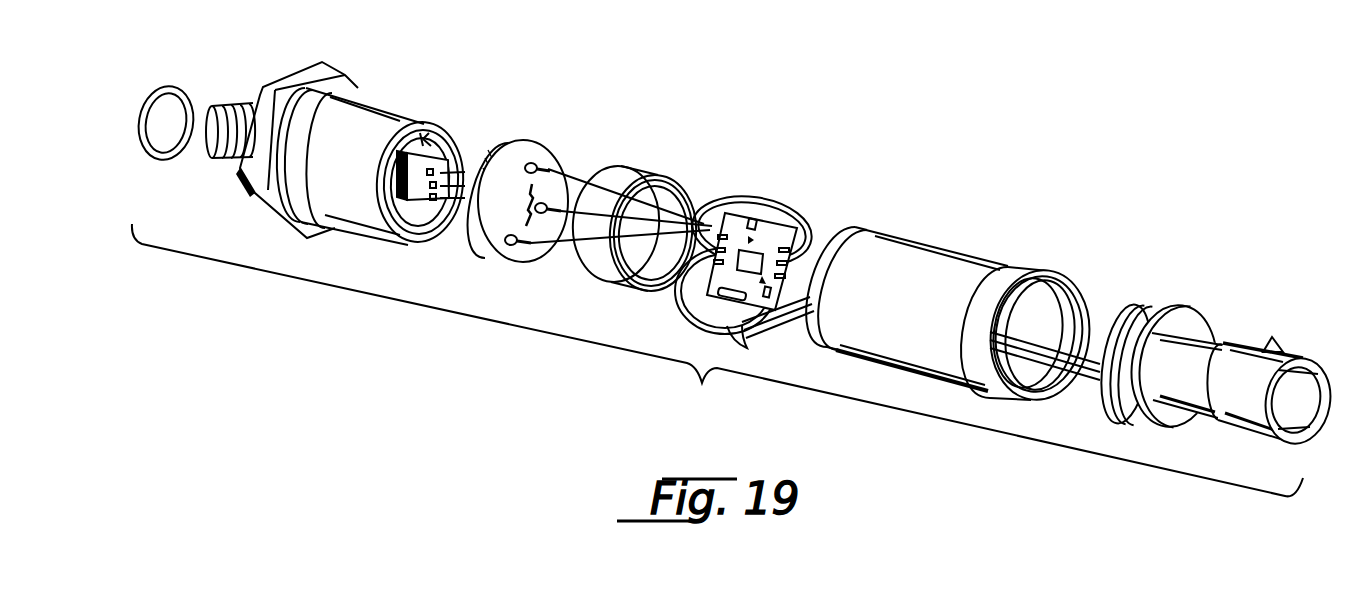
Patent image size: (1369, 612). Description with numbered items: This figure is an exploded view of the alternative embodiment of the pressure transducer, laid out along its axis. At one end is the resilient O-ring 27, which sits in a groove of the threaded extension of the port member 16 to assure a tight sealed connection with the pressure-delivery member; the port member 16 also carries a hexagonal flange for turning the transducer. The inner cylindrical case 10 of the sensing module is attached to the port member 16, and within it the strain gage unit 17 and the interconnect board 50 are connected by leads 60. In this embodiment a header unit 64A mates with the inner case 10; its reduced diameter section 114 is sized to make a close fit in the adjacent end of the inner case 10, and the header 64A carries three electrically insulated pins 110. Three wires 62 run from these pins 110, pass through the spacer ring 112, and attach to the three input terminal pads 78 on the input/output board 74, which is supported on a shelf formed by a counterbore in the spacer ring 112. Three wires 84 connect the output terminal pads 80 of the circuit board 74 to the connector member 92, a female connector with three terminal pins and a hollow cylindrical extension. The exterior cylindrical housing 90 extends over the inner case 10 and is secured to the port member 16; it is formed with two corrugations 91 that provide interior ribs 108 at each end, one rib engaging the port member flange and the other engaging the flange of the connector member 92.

The O-ring 27 is at (166, 88).
The port member 16 is at (357, 76).
The inner cylindrical case 10 is at (394, 100).
The strain gage unit 17 is at (426, 137).
The interconnect board 50 is at (440, 155).
The leads 60 is at (407, 226).
The wires 62 is at (445, 217).
The reduced diameter section 114 is at (472, 240).
The header unit 64A is at (533, 140).
The pins 110 is at (562, 208).
The spacer ring 112 is at (647, 172).
The input/output board 74 is at (769, 216).
The input terminal pads 78 is at (788, 248).
The output terminal pads 80 is at (710, 295).
The wire leads 84 is at (742, 338).
The exterior cylindrical housing 90 is at (948, 248).
The corrugations 91 is at (866, 228).
The interior ribs 108 is at (1060, 308).
The connector member 92 is at (1222, 336).